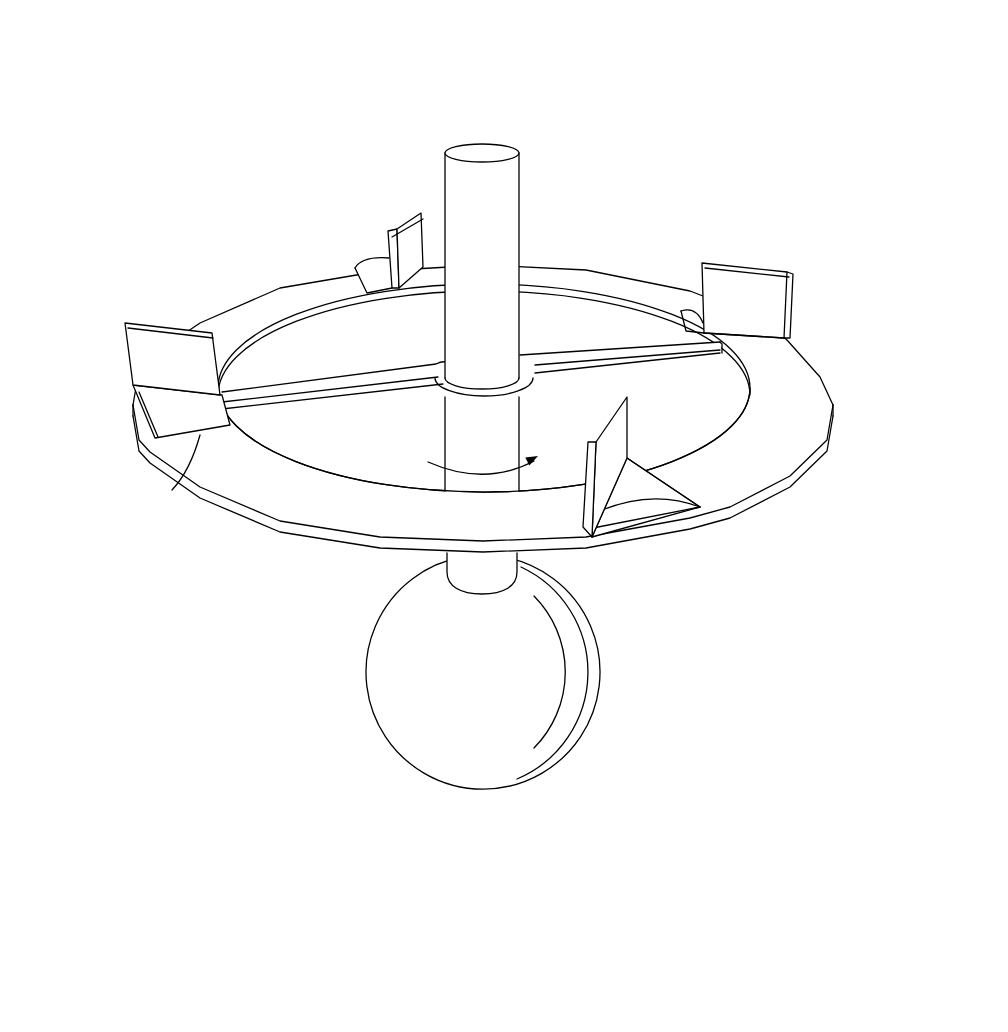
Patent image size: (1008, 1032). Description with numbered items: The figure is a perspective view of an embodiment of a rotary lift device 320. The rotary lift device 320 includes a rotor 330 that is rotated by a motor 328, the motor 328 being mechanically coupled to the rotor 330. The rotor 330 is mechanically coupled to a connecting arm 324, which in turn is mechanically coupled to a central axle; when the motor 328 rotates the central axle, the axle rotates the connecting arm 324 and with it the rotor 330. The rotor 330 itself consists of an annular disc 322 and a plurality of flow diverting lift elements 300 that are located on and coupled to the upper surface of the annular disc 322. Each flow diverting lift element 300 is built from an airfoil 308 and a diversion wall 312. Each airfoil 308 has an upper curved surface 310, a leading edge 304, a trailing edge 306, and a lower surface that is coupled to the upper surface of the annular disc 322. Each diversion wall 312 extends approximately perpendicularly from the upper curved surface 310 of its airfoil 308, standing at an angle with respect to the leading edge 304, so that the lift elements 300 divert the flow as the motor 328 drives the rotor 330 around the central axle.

The flow diverting lift element 300 is at (366, 190).
The leading edge 304 is at (185, 473).
The trailing edge 306 is at (777, 340).
The airfoil 308 is at (358, 274).
The upper curved surface 310 is at (196, 422).
The diversion wall 312 is at (416, 212).
The rotary lift device 320 is at (524, 78).
The annular disc 322 is at (824, 434).
The connecting arm 324 is at (385, 377).
The motor 328 is at (595, 672).
The rotor 330 is at (802, 563).